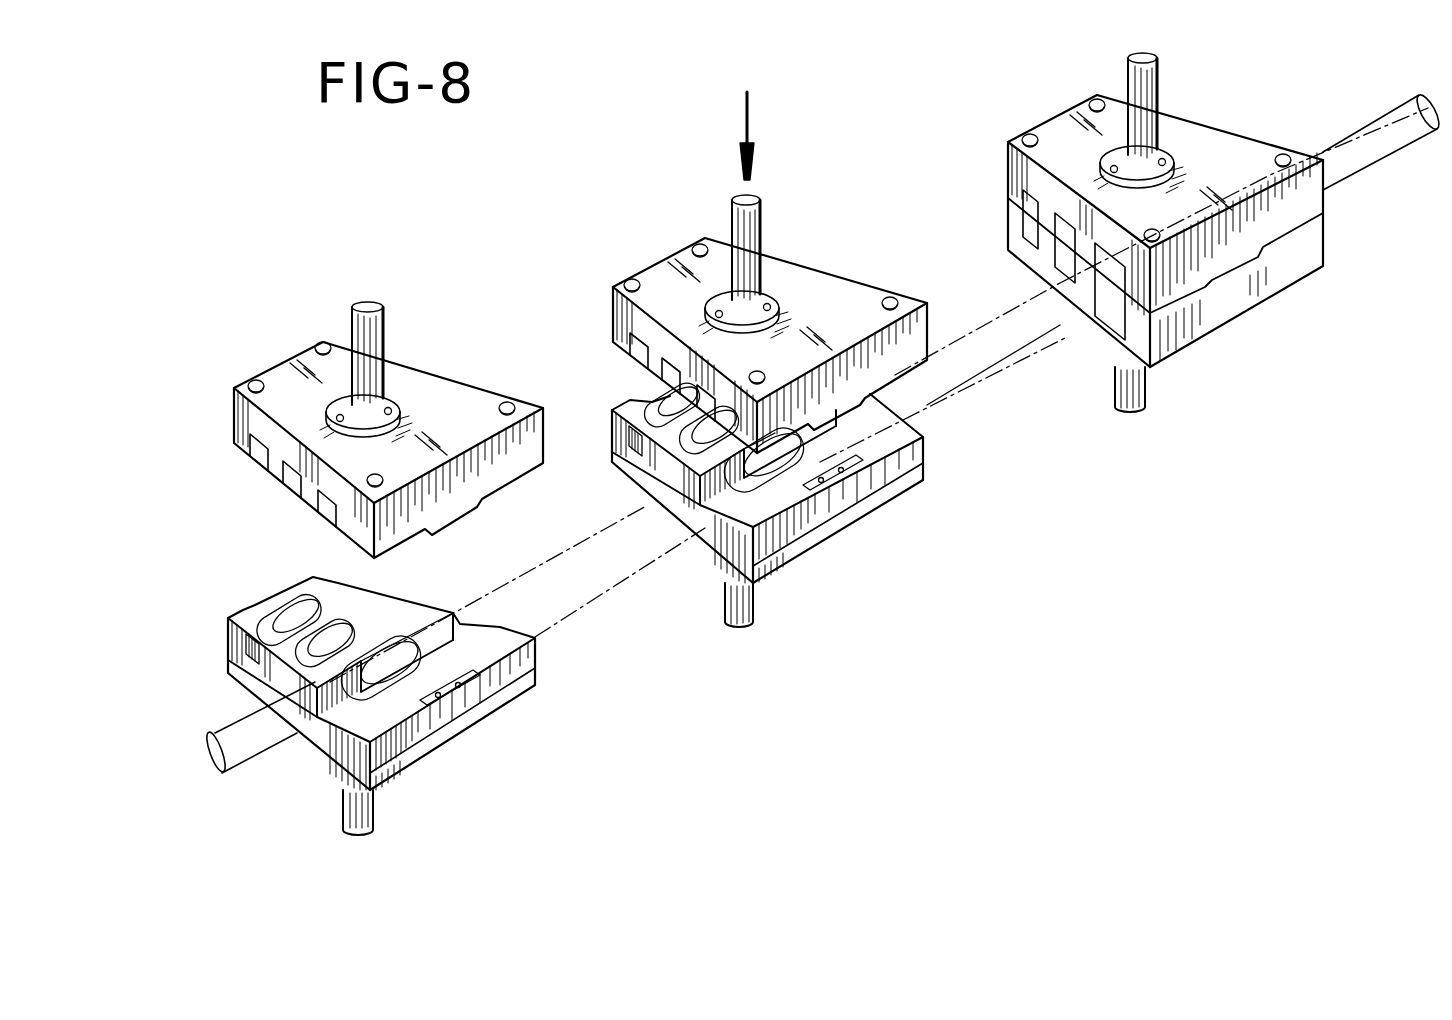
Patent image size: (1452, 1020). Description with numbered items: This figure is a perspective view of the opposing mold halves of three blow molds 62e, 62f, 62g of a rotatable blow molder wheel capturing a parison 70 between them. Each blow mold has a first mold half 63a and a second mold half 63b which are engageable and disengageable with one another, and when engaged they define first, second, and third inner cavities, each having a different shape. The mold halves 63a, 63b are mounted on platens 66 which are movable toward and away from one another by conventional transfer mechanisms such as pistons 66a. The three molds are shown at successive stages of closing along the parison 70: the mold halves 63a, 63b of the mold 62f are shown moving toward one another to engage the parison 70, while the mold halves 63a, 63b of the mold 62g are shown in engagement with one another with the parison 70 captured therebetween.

The blow mold 62e is at (423, 603).
The blow mold 62f is at (920, 337).
The blow mold 62g is at (1315, 212).
The first mold half 63a is at (236, 432).
The second mold half 63b is at (228, 642).
The platen 66 is at (450, 390).
The piston 66a is at (385, 318).
The parison 70 is at (588, 585).